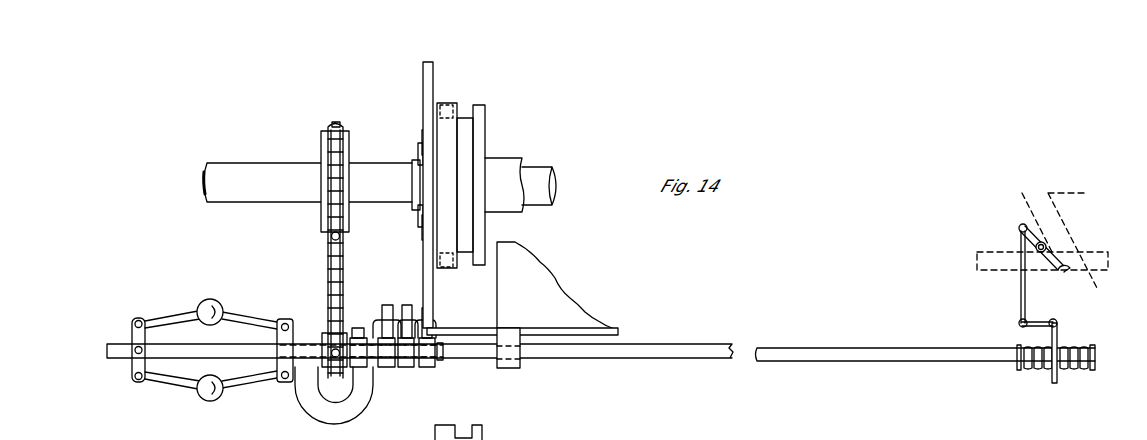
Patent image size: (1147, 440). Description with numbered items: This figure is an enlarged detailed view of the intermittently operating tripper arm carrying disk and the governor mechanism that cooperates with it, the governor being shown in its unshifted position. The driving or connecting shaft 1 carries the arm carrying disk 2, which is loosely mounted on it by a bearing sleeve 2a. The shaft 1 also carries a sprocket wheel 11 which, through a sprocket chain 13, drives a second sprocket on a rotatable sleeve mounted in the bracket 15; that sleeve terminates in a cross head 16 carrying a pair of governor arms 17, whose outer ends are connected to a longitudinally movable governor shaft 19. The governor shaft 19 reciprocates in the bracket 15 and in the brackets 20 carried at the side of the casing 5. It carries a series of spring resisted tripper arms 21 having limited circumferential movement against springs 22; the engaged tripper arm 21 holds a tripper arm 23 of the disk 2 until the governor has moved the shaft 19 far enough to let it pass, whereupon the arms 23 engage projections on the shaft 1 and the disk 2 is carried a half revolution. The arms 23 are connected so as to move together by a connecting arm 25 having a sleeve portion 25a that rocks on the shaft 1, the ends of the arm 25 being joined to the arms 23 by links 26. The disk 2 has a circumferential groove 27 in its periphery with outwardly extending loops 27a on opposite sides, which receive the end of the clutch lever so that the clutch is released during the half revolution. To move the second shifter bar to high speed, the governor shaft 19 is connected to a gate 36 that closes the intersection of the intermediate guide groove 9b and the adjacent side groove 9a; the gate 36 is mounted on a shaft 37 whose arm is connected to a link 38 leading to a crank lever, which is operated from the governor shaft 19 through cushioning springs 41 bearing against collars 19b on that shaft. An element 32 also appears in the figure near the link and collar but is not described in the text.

The driving or connecting shaft 1 is at (270, 183).
The arm carrying disk 2 is at (446, 272).
The bearing sleeve 2a is at (500, 168).
The casing 5 is at (556, 300).
The side groove 9a is at (1100, 282).
The intermediate guide groove 9b is at (1068, 229).
The sprocket wheel 11 is at (320, 220).
The sprocket chain 13 is at (345, 262).
The bracket 15 is at (365, 405).
The cross head 16 is at (282, 320).
The governor arms 17 is at (236, 312).
The governor shaft 19 is at (596, 360).
The collars 19b is at (1098, 378).
The brackets 20 is at (507, 369).
The tripper arms 21 is at (406, 305).
The springs 22 is at (385, 368).
The tripper arms 23 is at (424, 78).
The connecting arm 25 is at (412, 213).
The sleeve portion 25a is at (414, 167).
The links 26 is at (418, 140).
The circumferential groove 27 is at (470, 116).
The loops 27a is at (447, 104).
The arm 32 is at (1058, 330).
The gate 36 is at (1066, 273).
The shaft 37 is at (1046, 244).
The link 38 is at (1018, 292).
The cushioning springs 41 is at (1030, 372).